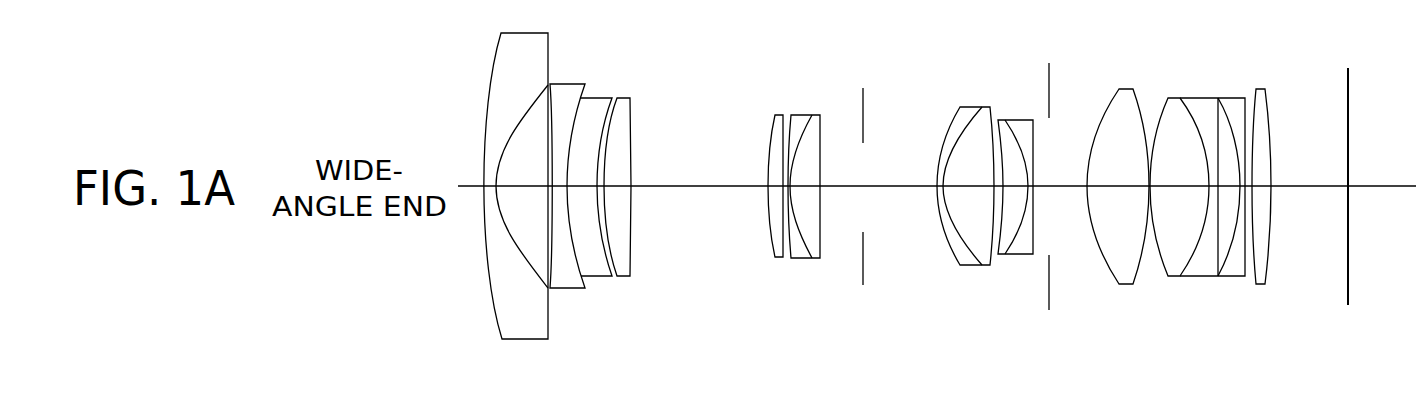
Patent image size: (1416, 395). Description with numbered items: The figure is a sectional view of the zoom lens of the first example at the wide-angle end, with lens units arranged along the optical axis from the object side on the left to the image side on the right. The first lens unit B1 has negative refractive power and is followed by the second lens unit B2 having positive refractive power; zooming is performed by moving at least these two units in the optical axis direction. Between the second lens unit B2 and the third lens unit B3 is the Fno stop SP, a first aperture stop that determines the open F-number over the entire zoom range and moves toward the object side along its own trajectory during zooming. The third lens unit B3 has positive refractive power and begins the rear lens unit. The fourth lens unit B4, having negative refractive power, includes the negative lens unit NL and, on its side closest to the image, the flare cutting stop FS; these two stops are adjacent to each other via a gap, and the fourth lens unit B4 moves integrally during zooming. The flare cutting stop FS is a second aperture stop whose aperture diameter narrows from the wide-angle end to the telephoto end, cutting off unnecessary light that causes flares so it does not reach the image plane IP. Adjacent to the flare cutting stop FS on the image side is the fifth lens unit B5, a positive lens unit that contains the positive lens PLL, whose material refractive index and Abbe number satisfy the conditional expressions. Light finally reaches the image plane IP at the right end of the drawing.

The first lens unit B1 is at (476, 325).
The second lens unit B2 is at (775, 394).
The third lens unit B3 is at (927, 394).
The fourth lens unit B4 is at (1029, 206).
The fifth lens unit B5 is at (1185, 212).
The Fno stop SP is at (843, 394).
The negative lens unit NL is at (1021, 118).
The flare cutting stop FS is at (1051, 98).
The positive lens PLL is at (1128, 103).
The image plane IP is at (1349, 112).